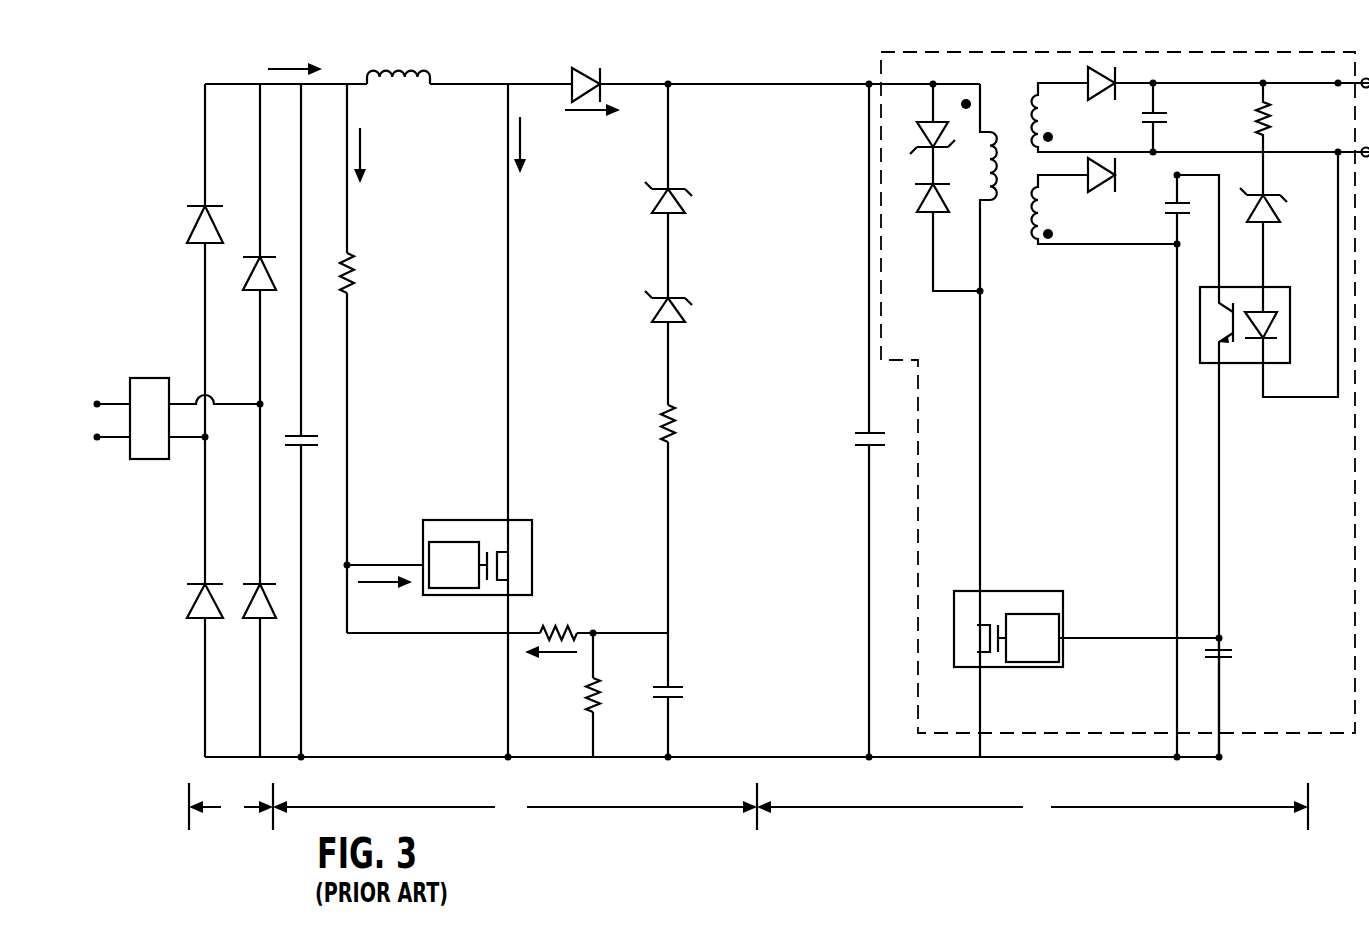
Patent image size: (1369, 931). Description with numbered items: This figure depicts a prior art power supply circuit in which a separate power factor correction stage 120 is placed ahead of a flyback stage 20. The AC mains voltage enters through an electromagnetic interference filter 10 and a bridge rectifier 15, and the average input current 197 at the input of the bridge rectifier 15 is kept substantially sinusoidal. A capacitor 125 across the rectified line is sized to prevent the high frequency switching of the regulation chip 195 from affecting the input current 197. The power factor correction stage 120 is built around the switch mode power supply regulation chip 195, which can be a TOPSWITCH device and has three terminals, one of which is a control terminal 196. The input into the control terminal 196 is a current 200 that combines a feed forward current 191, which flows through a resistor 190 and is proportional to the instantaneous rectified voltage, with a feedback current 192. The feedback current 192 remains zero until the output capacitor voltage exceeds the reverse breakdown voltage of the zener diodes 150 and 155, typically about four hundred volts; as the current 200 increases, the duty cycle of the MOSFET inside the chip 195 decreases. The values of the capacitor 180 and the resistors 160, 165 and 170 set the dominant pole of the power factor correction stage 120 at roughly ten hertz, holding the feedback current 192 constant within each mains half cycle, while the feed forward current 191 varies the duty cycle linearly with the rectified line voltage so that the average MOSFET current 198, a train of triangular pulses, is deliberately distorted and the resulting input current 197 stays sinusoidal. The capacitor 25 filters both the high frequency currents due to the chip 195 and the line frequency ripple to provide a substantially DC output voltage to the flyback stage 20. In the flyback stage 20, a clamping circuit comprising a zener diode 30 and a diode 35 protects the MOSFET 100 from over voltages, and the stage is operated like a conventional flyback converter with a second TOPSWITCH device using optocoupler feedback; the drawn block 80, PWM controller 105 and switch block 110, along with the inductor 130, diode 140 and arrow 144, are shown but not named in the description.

The Electromagnetic Interference filter 10 is at (178, 418).
The bridge rectifier 15 is at (231, 806).
The flyback stage 20 is at (1032, 806).
The capacitor 25 is at (874, 426).
The zener diode 30 is at (921, 138).
The diode 35 is at (918, 198).
The flyback power converter (dashed block) 80 is at (1097, 52).
The MOSFET 100 is at (981, 638).
The PWM controller 105 is at (1032, 627).
The switch control block 110 is at (1008, 616).
The power factor correction stage 120 is at (515, 806).
The capacitor 125 is at (311, 426).
The boost inductor 130 is at (398, 62).
The boost diode 140 is at (590, 70).
The diode current 144 is at (592, 122).
The zener diode 150 is at (686, 197).
The zener diode 155 is at (686, 306).
The resistor 160 is at (694, 423).
The resistor 165 is at (561, 615).
The resistor 170 is at (612, 695).
The capacitor 180 is at (683, 697).
The resistor 190 is at (366, 273).
The feed forward current 191 is at (378, 155).
The feedback current 192 is at (551, 663).
The switch mode power supply regulation chip 195 is at (477, 546).
The control terminal 196 is at (422, 562).
The input current 197 is at (295, 58).
The MOSFET current 198 is at (518, 348).
The current 200 is at (385, 597).